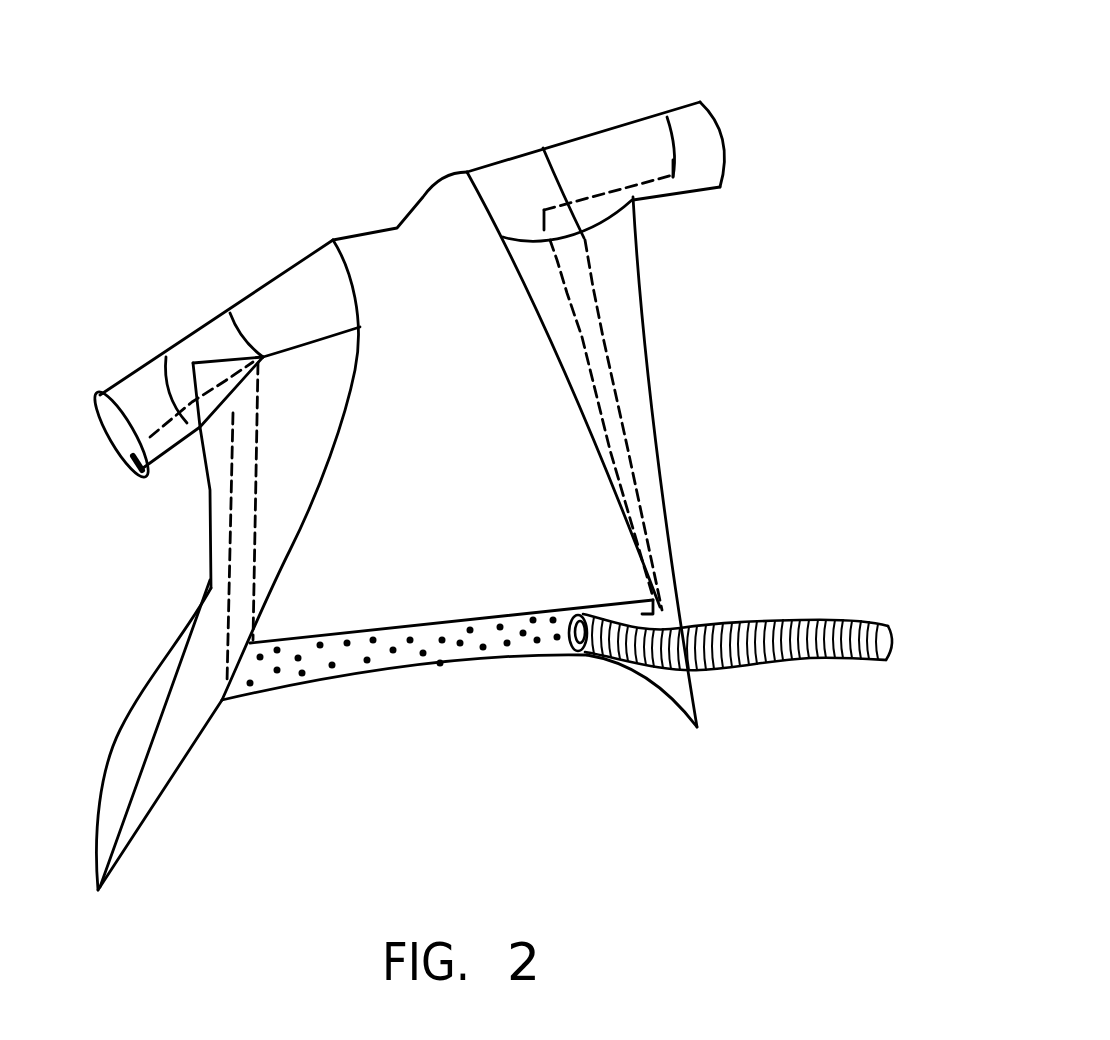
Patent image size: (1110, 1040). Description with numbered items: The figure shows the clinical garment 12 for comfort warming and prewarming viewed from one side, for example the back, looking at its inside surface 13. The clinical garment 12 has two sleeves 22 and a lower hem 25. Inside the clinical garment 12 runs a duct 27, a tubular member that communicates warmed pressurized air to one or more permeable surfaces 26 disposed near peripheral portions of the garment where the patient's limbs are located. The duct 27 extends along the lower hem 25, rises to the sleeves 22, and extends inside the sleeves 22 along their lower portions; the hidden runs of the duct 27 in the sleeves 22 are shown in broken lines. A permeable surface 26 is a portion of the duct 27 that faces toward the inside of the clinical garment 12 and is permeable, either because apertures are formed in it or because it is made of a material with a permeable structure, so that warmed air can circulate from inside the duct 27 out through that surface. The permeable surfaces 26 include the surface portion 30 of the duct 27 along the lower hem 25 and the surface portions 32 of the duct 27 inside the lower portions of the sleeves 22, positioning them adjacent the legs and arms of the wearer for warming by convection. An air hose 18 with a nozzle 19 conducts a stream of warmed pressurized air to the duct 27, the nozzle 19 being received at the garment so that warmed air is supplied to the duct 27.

The clinical garment 12 is at (690, 329).
The inside surface 13 is at (475, 437).
The air hose 18 is at (823, 663).
The nozzle 19 is at (583, 657).
The sleeves 22 is at (150, 363).
The lower hem 25 is at (440, 670).
The permeable surface 26 is at (113, 393).
The duct 27 is at (165, 448).
The surface portion 30 is at (362, 598).
The surface portions 32 is at (166, 357).